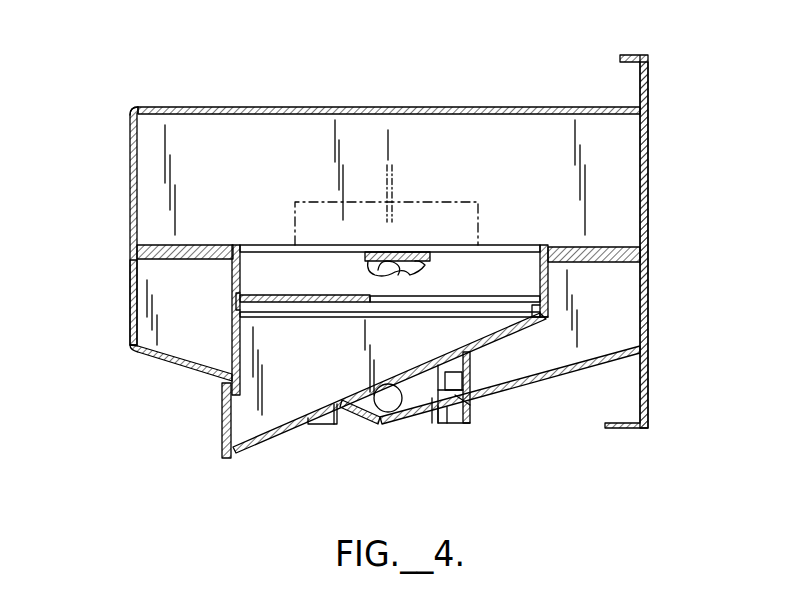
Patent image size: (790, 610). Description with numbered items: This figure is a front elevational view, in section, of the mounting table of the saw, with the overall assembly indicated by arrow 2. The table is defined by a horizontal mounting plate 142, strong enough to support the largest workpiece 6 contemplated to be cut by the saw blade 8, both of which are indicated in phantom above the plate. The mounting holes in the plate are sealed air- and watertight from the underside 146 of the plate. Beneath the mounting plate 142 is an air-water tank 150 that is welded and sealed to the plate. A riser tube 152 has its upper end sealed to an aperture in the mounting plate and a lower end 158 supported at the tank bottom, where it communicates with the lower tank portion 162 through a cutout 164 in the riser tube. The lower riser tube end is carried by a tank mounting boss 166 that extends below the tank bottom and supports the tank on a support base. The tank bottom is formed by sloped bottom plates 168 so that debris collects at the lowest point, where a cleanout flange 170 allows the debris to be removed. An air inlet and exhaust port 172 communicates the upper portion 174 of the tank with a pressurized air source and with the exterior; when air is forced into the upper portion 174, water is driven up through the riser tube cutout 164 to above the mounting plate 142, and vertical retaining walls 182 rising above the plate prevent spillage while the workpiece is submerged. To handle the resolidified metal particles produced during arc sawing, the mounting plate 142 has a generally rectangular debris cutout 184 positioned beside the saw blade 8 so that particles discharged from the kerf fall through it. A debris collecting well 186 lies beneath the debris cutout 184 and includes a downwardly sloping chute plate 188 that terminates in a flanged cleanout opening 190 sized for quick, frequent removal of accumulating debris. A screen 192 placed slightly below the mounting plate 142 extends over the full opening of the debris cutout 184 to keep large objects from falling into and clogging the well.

The apparatus 2 is at (383, 88).
The workpiece 6 is at (472, 200).
The saw blade 8 is at (393, 175).
The mounting plate 142 is at (150, 245).
The underside 146 is at (165, 262).
The air-water tank 150 is at (650, 293).
The riser tube 152 is at (470, 355).
The lower end 158 is at (470, 392).
The lower tank portion 162 is at (432, 423).
The cutout 164 is at (455, 380).
The tank mounting boss 166 is at (333, 425).
The sloped bottom plate 168 is at (165, 362).
The cleanout flange 170 is at (377, 414).
The air inlet and exhaust port 172 is at (395, 268).
The upper portion 174 is at (632, 265).
The vertical retaining wall 182 is at (130, 172).
The debris cutout 184 is at (490, 250).
The debris collecting well 186 is at (298, 372).
The chute plate 188 is at (270, 433).
The flanged cleanout opening 190 is at (222, 426).
The screen 192 is at (258, 293).